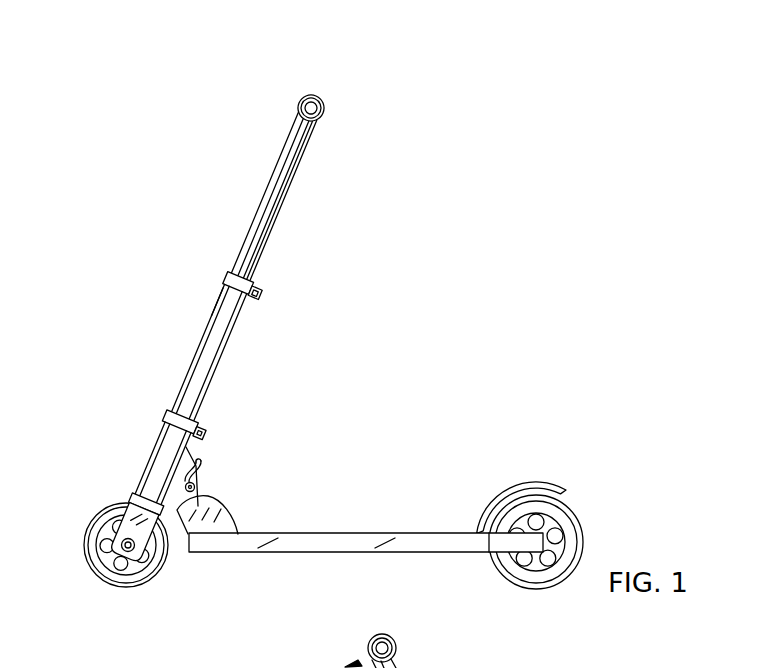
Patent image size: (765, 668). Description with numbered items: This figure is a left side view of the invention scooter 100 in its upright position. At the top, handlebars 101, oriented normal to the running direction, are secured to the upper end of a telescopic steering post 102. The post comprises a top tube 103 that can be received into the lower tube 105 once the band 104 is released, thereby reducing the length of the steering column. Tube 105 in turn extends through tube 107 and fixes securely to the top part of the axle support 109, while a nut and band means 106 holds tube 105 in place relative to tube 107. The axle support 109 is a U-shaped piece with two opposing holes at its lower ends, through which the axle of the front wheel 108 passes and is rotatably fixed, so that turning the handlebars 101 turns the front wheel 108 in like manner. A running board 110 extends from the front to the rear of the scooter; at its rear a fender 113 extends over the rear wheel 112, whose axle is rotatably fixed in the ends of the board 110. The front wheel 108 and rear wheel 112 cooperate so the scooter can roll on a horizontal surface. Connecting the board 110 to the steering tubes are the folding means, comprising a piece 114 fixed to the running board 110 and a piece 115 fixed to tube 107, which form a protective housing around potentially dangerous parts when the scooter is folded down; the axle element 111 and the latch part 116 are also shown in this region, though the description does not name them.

The scooter 100 is at (143, 220).
The handlebars 101 is at (302, 98).
The telescopic steering post 102 is at (261, 313).
The top tube 103 is at (262, 200).
The band 104 is at (225, 281).
The tube 105 is at (205, 343).
The nut and band means 106 is at (171, 423).
The tube 107 is at (152, 471).
The front wheel 108 is at (95, 512).
The axle support 109 is at (134, 552).
The running board 110 is at (346, 533).
The rear axle 111 is at (519, 550).
The rear wheel 112 is at (578, 524).
The fender 113 is at (515, 487).
The piece 114 is at (223, 517).
The piece 115 is at (194, 456).
The latch lever 116 is at (204, 474).